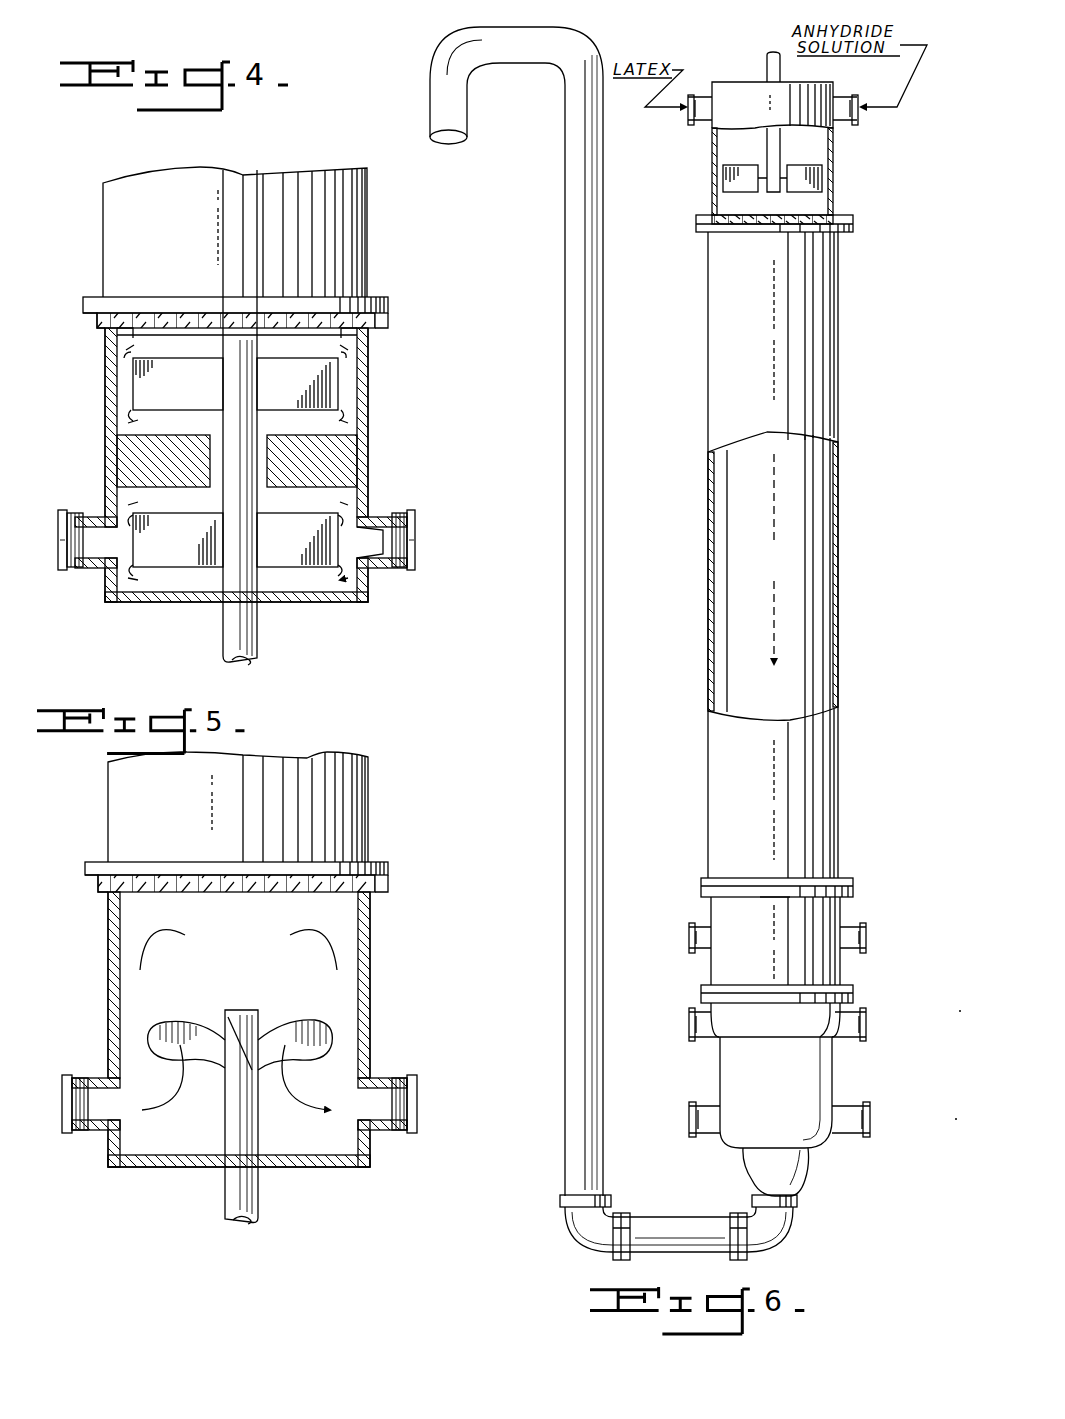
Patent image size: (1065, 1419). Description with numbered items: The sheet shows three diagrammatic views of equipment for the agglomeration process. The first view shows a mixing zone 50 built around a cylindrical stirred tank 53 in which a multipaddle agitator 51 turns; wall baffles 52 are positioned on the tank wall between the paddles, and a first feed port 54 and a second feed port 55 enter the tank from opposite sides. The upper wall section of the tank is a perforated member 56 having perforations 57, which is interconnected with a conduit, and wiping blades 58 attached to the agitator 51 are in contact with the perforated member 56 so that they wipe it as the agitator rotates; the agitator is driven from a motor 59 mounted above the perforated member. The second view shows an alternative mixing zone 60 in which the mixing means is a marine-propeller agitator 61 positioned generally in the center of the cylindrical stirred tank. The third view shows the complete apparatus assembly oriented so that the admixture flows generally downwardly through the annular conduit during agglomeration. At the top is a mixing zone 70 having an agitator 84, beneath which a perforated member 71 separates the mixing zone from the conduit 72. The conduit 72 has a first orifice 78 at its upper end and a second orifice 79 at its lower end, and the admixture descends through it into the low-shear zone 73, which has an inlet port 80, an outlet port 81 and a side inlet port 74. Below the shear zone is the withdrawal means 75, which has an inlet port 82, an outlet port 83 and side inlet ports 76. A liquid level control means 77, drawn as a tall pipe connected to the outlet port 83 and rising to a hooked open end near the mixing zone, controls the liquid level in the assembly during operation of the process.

In FIG. 4, the mixing zone 50 is at (82, 443).
In FIG. 4, the multipaddle agitator 51 is at (340, 390).
In FIG. 4, the wall baffles 52 is at (208, 488).
In FIG. 4, the stirred tank 53 is at (326, 603).
In FIG. 4, the first feed port 54 is at (416, 540).
In FIG. 4, the second feed port 55 is at (58, 548).
In FIG. 4, the perforated member 56 is at (221, 318).
In FIG. 4, the perforations 57 is at (214, 318).
In FIG. 4, the wiping blades 58 is at (118, 342).
In FIG. 4, the motor 59 is at (372, 205).
In FIG. 5, the mixing zone 60 is at (371, 975).
In FIG. 5, the marine-propeller agitator 61 is at (226, 1130).
In FIG. 6, the mixing zone 70 is at (815, 82).
In FIG. 6, the perforated member 71 is at (815, 215).
In FIG. 6, the conduit 72 is at (838, 430).
In FIG. 6, the shear zone 73 is at (843, 917).
In FIG. 6, the inlet port 74 is at (689, 940).
In FIG. 6, the withdrawal means 75 is at (783, 1087).
In FIG. 6, the inlet port 76 is at (689, 1028).
In FIG. 6, the liquid level control means 77 is at (565, 700).
In FIG. 6, the first orifice 78 is at (735, 235).
In FIG. 6, the second orifice 79 is at (795, 878).
In FIG. 6, the inlet port 80 is at (776, 897).
In FIG. 6, the outlet port 81 is at (766, 985).
In FIG. 6, the inlet port 82 is at (779, 1003).
In FIG. 6, the outlet port 83 is at (760, 1192).
In FIG. 6, the agitator 84 is at (766, 160).